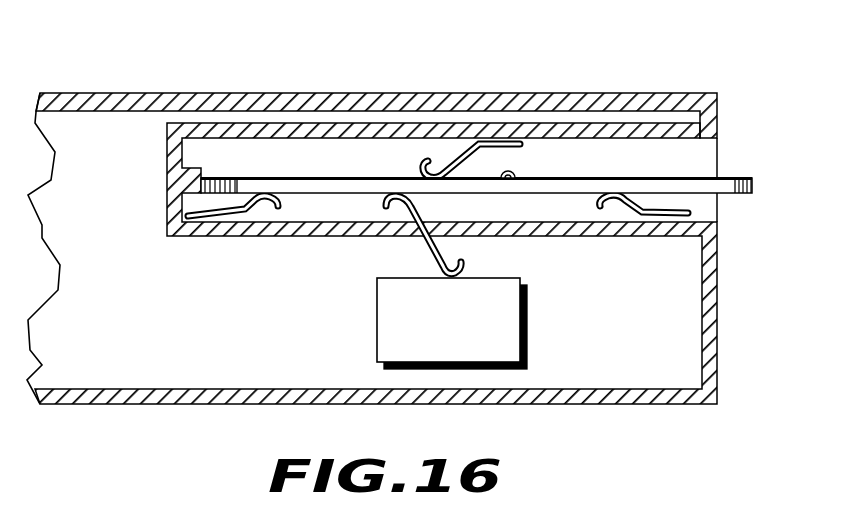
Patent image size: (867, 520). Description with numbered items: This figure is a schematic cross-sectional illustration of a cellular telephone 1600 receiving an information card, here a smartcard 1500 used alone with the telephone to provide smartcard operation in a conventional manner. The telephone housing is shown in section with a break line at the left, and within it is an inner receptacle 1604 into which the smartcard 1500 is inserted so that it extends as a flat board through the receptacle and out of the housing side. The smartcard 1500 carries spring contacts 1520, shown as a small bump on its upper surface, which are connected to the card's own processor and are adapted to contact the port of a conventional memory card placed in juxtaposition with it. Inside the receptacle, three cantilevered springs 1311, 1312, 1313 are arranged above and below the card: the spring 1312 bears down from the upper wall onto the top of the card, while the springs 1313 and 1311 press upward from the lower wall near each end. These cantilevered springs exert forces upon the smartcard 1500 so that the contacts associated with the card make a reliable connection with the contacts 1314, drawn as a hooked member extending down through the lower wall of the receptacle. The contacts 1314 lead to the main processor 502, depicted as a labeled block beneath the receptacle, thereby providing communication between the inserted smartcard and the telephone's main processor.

The cellular telephone 1600 is at (617, 74).
The housing slot 1604 is at (703, 153).
The smartcard 1500 is at (732, 194).
The spring contacts 1520 is at (514, 172).
The cantilevered spring 1311 is at (630, 217).
The cantilevered spring 1312 is at (463, 143).
The cantilevered spring 1313 is at (257, 215).
The contacts 1314 is at (423, 252).
The main processor 502 is at (523, 343).